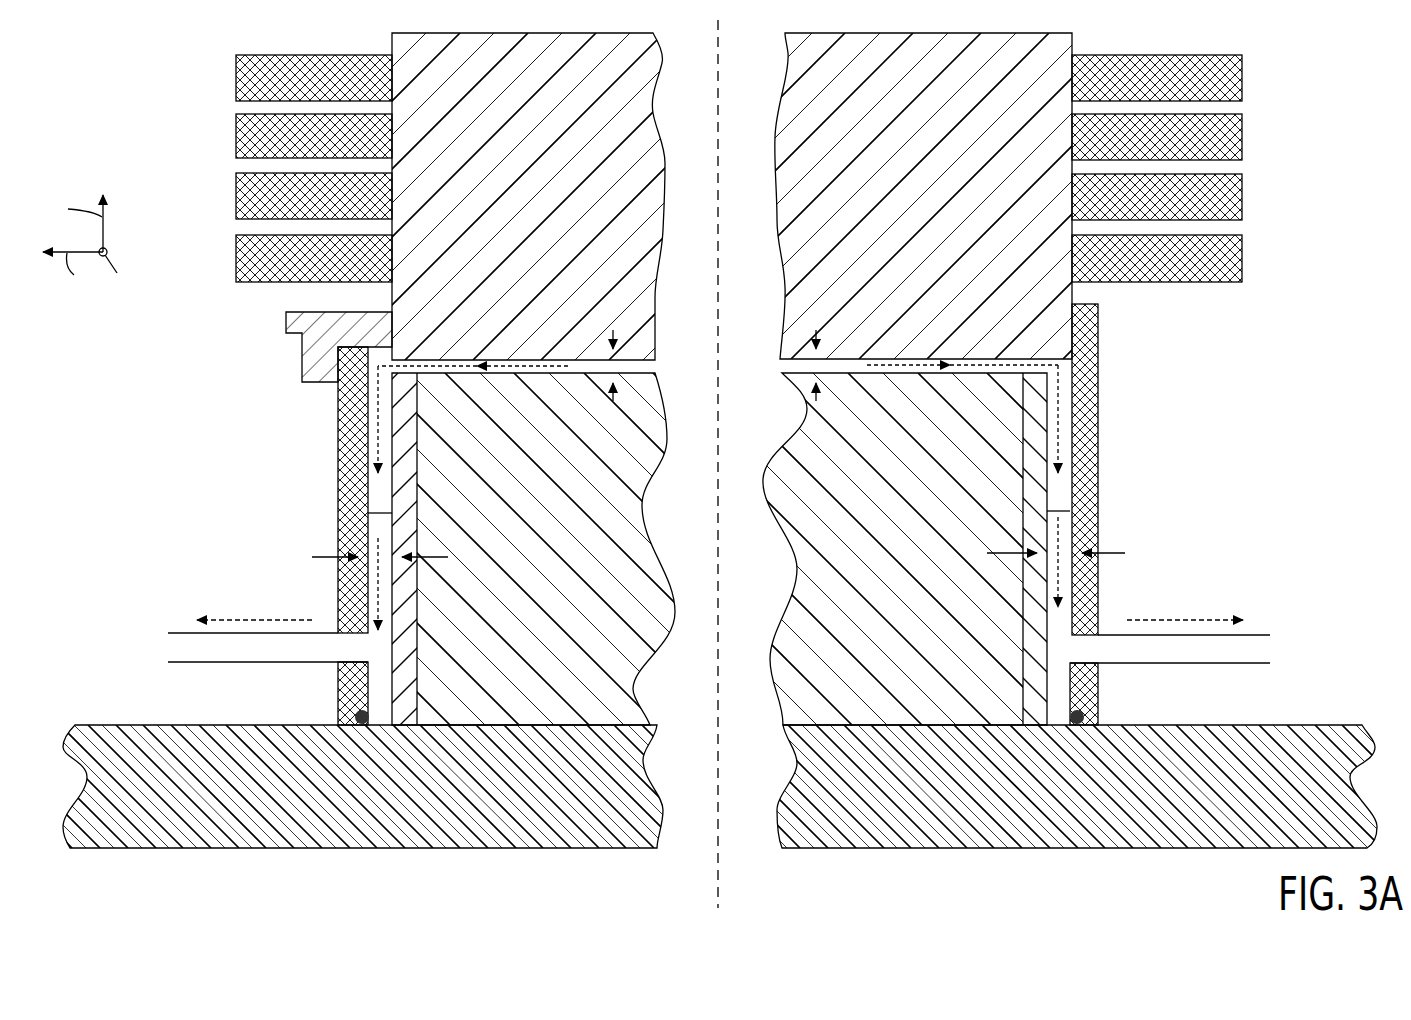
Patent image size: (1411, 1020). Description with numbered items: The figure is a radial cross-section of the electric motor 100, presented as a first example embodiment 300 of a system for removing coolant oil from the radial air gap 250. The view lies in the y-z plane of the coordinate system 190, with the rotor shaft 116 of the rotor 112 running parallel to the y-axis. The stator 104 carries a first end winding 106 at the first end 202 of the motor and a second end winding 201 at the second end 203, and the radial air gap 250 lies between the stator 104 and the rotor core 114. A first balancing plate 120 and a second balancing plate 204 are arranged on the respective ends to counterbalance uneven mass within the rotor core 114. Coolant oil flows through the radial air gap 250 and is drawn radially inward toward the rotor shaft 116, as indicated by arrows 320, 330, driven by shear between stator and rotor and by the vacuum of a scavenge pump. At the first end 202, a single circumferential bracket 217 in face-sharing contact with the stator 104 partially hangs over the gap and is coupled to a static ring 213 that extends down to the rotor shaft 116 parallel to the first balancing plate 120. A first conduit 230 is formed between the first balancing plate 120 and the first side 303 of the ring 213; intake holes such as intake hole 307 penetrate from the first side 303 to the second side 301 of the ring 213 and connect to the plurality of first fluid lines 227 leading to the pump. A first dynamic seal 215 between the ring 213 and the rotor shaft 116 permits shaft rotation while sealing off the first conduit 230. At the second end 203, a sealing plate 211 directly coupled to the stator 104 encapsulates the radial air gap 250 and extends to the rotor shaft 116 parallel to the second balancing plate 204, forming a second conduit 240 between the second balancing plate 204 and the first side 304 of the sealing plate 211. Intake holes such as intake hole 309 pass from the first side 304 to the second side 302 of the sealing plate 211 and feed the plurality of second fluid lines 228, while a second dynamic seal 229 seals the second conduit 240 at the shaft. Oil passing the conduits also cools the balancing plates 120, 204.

The electric motor 100 is at (1318, 95).
The first example embodiment 300 is at (58, 63).
The coordinate system 190 is at (124, 210).
The stator 104 is at (543, 203).
The first end winding 106 is at (236, 258).
The second end winding 201 is at (1242, 260).
The rotor 112 is at (655, 555).
The rotor core 114 is at (531, 560).
The rotor shaft 116 is at (180, 725).
The first balancing plate 120 is at (370, 513).
The second balancing plate 204 is at (1047, 511).
The first end 202 is at (138, 478).
The second end 203 is at (1314, 476).
The sealing plate 211 is at (1118, 314).
The ring 213 is at (306, 400).
The first dynamic seal 215 is at (355, 712).
The second dynamic seal 229 is at (1080, 712).
The bracket 217 is at (286, 322).
The first fluid lines 227 is at (170, 633).
The second fluid lines 228 is at (1270, 635).
The first conduit 230 is at (320, 557).
The second conduit 240 is at (1125, 553).
The radial air gap 250 is at (613, 333).
The second side of the ring 301 is at (338, 498).
The second side of the sealing plate 302 is at (1100, 427).
The first side of the ring 303 is at (338, 442).
The first side of the sealing plate 304 is at (1100, 375).
The intake hole 307 is at (332, 645).
The intake hole 309 is at (1108, 648).
The arrows 320 is at (510, 366).
The arrows 330 is at (378, 467).